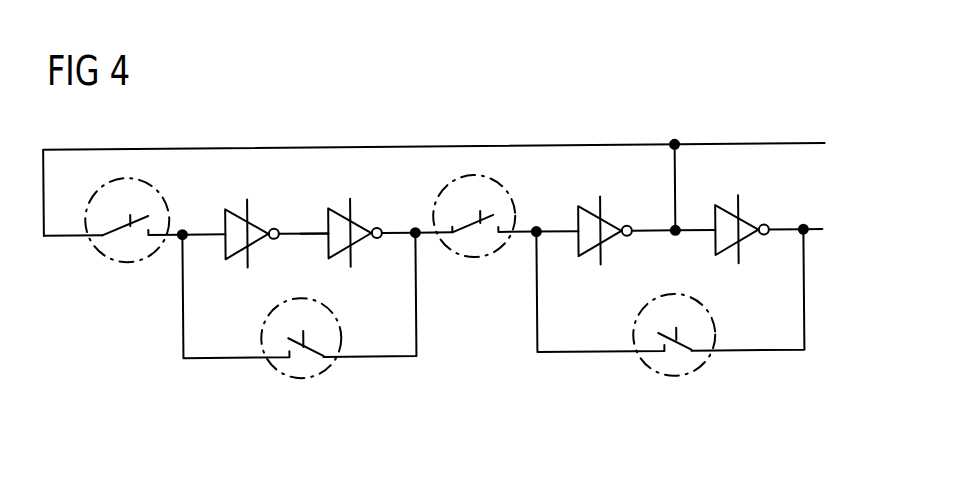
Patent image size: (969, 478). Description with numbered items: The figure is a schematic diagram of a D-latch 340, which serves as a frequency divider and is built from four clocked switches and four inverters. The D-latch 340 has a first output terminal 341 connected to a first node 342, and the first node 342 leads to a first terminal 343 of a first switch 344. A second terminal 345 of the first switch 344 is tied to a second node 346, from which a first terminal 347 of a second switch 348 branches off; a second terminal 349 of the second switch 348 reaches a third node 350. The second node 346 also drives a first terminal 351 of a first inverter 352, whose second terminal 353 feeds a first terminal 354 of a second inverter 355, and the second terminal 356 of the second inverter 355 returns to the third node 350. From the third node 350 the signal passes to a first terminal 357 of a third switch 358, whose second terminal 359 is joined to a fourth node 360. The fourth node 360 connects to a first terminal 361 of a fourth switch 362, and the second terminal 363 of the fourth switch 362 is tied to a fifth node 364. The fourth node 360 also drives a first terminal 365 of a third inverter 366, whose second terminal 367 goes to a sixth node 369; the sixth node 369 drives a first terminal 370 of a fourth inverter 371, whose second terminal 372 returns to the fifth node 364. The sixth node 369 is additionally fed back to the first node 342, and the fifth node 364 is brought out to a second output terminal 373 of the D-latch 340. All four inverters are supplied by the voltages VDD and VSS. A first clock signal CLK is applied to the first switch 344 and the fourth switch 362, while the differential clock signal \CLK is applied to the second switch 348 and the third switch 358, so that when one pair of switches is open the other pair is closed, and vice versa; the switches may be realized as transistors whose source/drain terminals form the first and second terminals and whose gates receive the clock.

The D-latch 340 is at (393, 131).
The first output terminal 341 is at (795, 146).
The first node 342 is at (675, 145).
The first terminal of the first switch 343 is at (104, 240).
The first switch 344 is at (153, 191).
The second terminal of the first switch 345 is at (152, 240).
The second node 346 is at (183, 230).
The first terminal of the second switch 347 is at (288, 354).
The second switch 348 is at (321, 376).
The second terminal of the second switch 349 is at (316, 346).
The third node 350 is at (412, 237).
The first terminal of the first inverter 351 is at (224, 240).
The first inverter 352 is at (235, 207).
The second terminal of the first inverter 353 is at (273, 227).
The first terminal of the second inverter 354 is at (327, 240).
The second inverter 355 is at (338, 207).
The second terminal of the second inverter 356 is at (376, 227).
The first terminal of the third switch 357 is at (452, 237).
The third switch 358 is at (443, 189).
The second terminal of the third switch 359 is at (503, 237).
The fourth node 360 is at (537, 230).
The first terminal of the fourth switch 361 is at (657, 357).
The fourth switch 362 is at (632, 333).
The second terminal of the fourth switch 363 is at (715, 339).
The fifth node 364 is at (800, 237).
The first terminal of the third inverter 365 is at (578, 240).
The third inverter 366 is at (590, 207).
The second terminal of the third inverter 367 is at (627, 227).
The sixth node 369 is at (670, 236).
The first terminal of the fourth inverter 370 is at (715, 240).
The fourth inverter 371 is at (727, 207).
The second terminal of the fourth inverter 372 is at (764, 228).
The second output terminal 373 is at (808, 232).